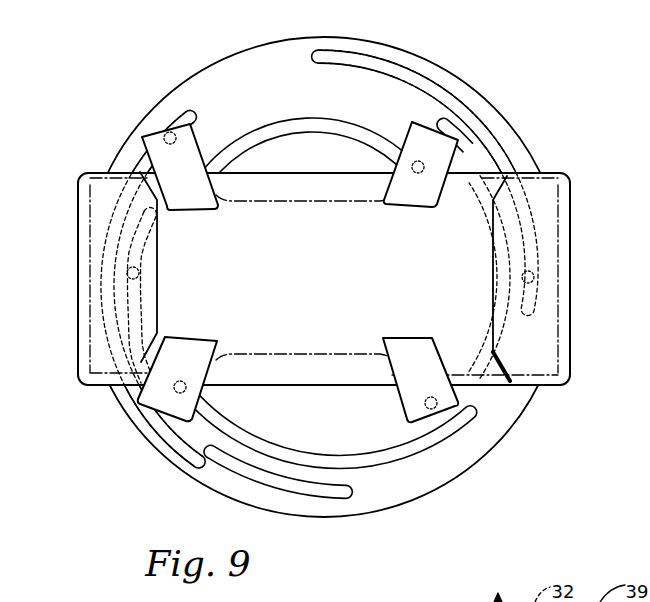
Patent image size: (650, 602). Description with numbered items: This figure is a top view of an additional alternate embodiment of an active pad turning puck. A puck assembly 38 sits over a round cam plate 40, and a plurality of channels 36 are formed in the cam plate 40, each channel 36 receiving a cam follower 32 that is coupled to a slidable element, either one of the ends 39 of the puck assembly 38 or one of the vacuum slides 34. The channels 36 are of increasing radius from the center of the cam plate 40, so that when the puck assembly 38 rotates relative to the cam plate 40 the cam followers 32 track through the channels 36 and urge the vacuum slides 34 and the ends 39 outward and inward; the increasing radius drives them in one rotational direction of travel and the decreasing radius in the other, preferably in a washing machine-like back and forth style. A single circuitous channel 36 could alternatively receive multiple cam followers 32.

The cam follower 32 is at (148, 137).
The vacuum slide 34 is at (185, 137).
The channel 36 is at (385, 137).
The puck assembly 38 is at (343, 330).
The end 39 is at (102, 340).
The cam plate 40 is at (252, 83).